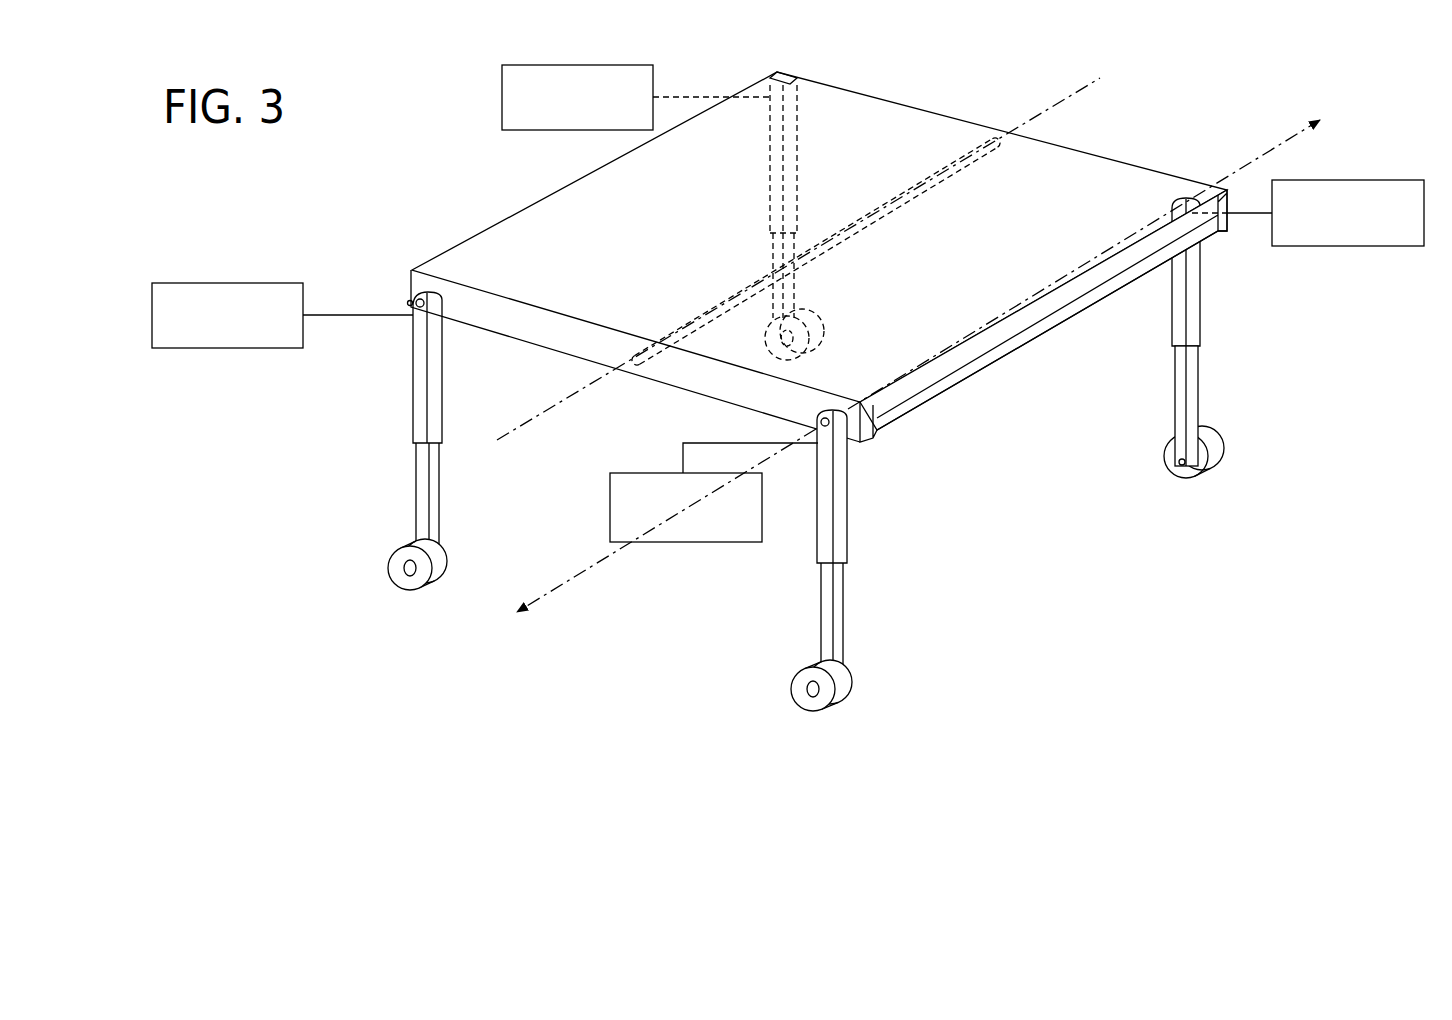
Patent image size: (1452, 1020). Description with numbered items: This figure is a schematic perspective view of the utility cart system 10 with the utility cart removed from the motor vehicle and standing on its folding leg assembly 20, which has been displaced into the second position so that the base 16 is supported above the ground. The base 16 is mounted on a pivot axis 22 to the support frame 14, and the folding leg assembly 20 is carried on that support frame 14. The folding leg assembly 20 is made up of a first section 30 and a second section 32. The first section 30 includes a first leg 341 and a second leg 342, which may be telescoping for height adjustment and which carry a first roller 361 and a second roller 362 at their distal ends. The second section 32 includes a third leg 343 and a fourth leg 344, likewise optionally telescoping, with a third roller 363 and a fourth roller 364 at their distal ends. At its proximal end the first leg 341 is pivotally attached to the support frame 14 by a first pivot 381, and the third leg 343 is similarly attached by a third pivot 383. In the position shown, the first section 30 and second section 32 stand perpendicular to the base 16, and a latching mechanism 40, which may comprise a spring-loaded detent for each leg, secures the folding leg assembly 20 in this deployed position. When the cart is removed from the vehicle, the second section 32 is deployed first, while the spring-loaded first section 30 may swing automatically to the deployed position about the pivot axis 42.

The utility cart system 10 is at (472, 135).
The support frame 14 is at (686, 372).
The base 16 is at (998, 342).
The folding leg assembly 20 is at (642, 346).
The pivot axis 22 is at (1100, 78).
The first section 30 is at (998, 470).
The second section 32 is at (465, 495).
The first leg 341 is at (811, 580).
The second leg 342 is at (1241, 364).
The third leg 343 is at (367, 444).
The fourth leg 344 is at (896, 251).
The first roller 361 is at (797, 697).
The second roller 362 is at (1216, 470).
The third roller 363 is at (403, 577).
The fourth roller 364 is at (835, 347).
The first pivot 381 is at (827, 443).
The third pivot 383 is at (416, 303).
The latching mechanism 40 is at (557, 130).
The pivot axis 42 is at (1304, 124).